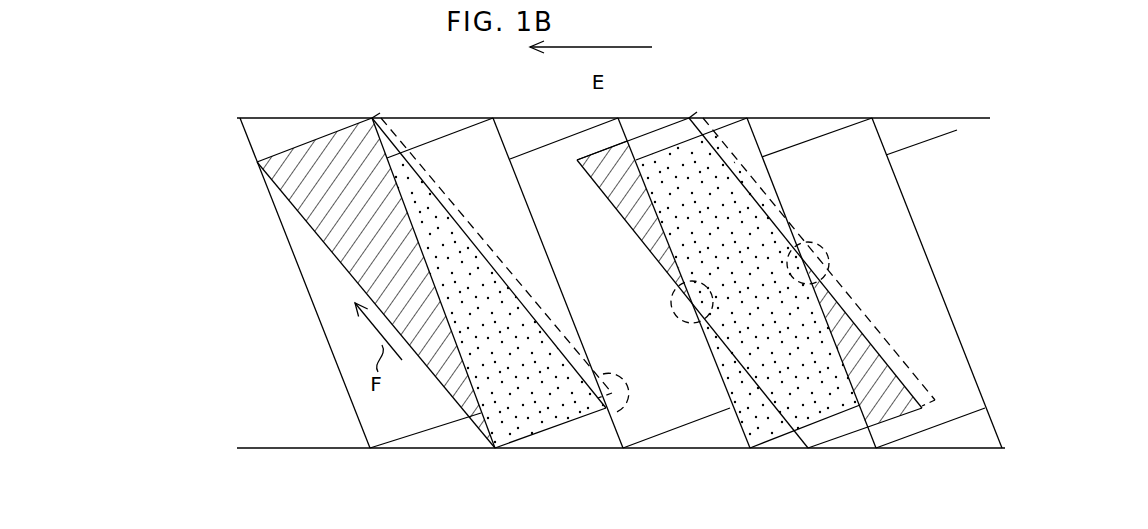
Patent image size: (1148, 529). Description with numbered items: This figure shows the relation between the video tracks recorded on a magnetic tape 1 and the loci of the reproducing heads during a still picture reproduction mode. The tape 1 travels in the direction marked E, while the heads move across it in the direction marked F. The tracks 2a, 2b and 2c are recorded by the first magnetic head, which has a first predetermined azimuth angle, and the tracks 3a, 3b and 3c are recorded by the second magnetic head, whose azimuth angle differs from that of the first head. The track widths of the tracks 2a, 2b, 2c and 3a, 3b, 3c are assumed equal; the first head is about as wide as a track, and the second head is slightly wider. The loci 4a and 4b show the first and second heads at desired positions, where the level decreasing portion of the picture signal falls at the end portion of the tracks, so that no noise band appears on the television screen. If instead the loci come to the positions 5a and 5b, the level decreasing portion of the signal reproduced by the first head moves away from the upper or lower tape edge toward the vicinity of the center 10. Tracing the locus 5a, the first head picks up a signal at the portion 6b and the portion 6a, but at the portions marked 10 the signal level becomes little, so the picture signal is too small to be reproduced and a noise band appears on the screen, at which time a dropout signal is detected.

The magnetic tape 1 is at (307, 427).
The track recorded by the first magnetic head 2a is at (397, 428).
The track recorded by the first magnetic head 2b is at (670, 420).
The track recorded by the first magnetic head 2c is at (958, 407).
The track recorded by the second magnetic head 3a is at (477, 142).
The track recorded by the second magnetic head 3b is at (737, 133).
The track recorded by the second magnetic head 3c is at (923, 153).
The locus of the first magnetic head 4a is at (477, 432).
The locus of the second magnetic head 4b is at (606, 430).
The locus of the first magnetic head 5a is at (777, 413).
The locus of the second magnetic head 5b is at (922, 392).
The signal pickup portion 6a is at (612, 195).
The signal pickup portion 6b is at (858, 347).
The center portion with little signal level 10 is at (675, 316).